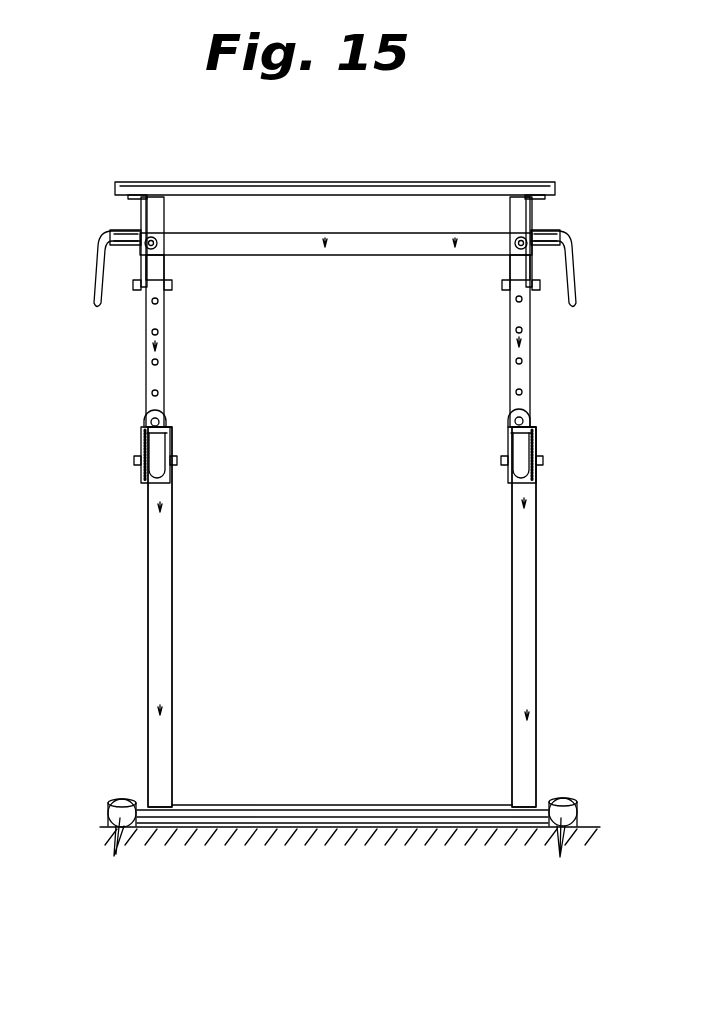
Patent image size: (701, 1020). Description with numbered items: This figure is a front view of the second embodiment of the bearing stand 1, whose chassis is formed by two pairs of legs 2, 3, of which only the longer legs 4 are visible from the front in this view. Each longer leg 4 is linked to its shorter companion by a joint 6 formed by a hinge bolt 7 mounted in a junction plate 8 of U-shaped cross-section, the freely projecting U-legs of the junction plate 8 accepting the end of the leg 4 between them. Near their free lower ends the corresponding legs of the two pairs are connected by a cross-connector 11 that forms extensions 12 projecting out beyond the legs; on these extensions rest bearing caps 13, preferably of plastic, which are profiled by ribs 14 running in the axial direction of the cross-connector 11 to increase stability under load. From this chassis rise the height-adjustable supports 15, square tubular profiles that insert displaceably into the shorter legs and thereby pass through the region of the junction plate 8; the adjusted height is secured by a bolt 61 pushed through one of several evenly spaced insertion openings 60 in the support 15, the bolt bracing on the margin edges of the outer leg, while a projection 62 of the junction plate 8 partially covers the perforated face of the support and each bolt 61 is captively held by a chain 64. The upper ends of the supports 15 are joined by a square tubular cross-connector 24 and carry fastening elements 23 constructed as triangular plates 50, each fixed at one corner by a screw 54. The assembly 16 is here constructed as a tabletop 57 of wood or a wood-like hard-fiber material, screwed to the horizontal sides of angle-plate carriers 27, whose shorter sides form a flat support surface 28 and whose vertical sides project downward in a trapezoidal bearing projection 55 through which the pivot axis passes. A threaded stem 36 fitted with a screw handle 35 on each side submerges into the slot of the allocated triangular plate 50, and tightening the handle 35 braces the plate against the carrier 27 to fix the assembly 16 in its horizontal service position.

The bearing stand 1 is at (600, 172).
The leg pair 2 is at (547, 658).
The leg pair 3 is at (138, 660).
The leg 4 is at (156, 617).
The joint 6 is at (125, 503).
The hinge bolt 7 is at (136, 463).
The junction plate 8 is at (140, 445).
The cross-connector 11 is at (337, 818).
The extension 12 is at (146, 800).
The bearing cap 13 is at (109, 807).
The rib 14 is at (341, 853).
The support 15 is at (152, 348).
The assembly 16 is at (402, 152).
The fastening element 23 is at (147, 278).
The cross-connector 24 is at (352, 243).
The carrier 27 is at (137, 210).
The support surface 28 is at (129, 193).
The screw handle 35 is at (98, 272).
The threaded stem 36 is at (152, 238).
The triangular plate 50 is at (160, 305).
The screw 54 is at (135, 290).
The bearing projection 55 is at (110, 259).
The tabletop 57 is at (305, 183).
The insertion opening 60 is at (158, 393).
The bolt 61 is at (160, 422).
The projection 62 is at (148, 419).
The chain 64 is at (165, 478).